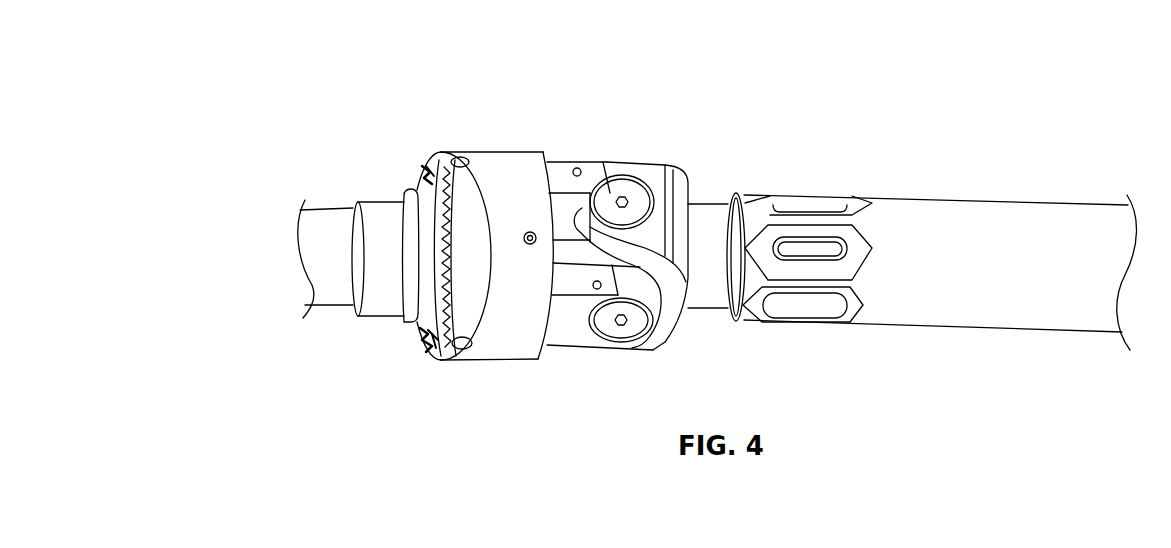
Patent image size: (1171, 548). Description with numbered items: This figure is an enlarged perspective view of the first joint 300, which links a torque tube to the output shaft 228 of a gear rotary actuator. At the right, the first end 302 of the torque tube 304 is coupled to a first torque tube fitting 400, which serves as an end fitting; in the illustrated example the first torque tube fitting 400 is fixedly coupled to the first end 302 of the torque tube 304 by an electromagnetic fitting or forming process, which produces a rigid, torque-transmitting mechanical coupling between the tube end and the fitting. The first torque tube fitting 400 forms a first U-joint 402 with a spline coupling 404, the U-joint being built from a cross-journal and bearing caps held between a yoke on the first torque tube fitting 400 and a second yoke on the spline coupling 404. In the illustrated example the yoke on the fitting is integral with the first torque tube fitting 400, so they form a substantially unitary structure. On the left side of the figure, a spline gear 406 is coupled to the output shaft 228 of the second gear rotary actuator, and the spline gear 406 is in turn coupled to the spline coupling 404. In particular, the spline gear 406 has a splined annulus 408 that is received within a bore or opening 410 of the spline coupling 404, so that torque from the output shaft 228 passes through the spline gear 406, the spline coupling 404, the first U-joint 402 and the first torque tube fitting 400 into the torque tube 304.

The first joint 300 is at (527, 48).
The output shaft 228 is at (327, 222).
The spline gear 406 is at (396, 211).
The splined annulus 408 is at (423, 330).
The bore or opening 410 is at (416, 350).
The spline coupling 404 is at (512, 172).
The first U-joint 402 is at (676, 140).
The first torque tube fitting 400 is at (718, 287).
The first end 302 is at (747, 203).
The torque tube 304 is at (1030, 210).